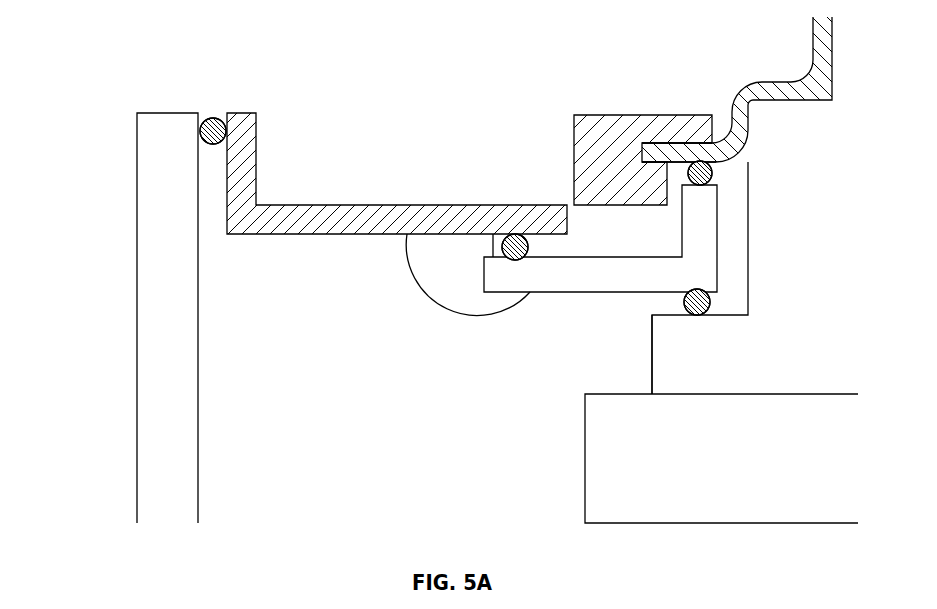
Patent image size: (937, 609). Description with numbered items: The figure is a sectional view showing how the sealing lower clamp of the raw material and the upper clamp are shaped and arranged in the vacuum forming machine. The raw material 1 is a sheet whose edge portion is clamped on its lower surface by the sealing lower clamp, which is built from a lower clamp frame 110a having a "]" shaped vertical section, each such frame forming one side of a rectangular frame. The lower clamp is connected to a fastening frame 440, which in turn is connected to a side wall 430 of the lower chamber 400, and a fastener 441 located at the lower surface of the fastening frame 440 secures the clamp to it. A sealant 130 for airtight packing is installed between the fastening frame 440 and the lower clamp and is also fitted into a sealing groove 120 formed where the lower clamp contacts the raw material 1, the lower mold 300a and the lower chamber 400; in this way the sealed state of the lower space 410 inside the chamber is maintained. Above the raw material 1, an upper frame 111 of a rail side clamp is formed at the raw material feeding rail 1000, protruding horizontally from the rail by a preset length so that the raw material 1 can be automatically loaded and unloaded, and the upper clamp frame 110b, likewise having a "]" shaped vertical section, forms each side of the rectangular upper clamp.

The raw material 1 is at (833, 40).
The lower clamp frame 110a is at (590, 288).
The upper clamp frame 110b is at (758, 87).
The upper frame of rail side clamp 111 is at (673, 128).
The sealing groove 120 is at (708, 194).
The sealant for airtight packing 130 is at (713, 177).
The raw material feeding rail 1000 is at (575, 150).
The lower mold 300a is at (660, 370).
The lower chamber 400 is at (294, 318).
The lower space 410 is at (414, 460).
The side wall 430 is at (143, 477).
The fastening frame 440 is at (320, 236).
The fastener 441 is at (437, 276).